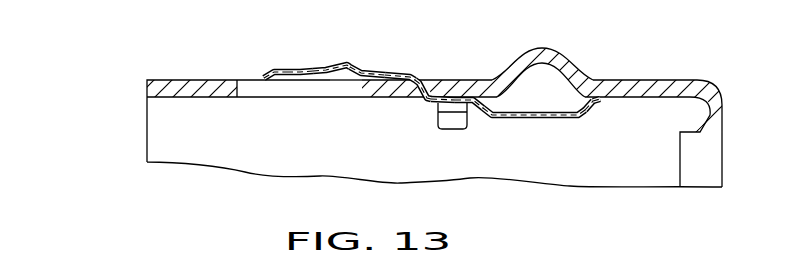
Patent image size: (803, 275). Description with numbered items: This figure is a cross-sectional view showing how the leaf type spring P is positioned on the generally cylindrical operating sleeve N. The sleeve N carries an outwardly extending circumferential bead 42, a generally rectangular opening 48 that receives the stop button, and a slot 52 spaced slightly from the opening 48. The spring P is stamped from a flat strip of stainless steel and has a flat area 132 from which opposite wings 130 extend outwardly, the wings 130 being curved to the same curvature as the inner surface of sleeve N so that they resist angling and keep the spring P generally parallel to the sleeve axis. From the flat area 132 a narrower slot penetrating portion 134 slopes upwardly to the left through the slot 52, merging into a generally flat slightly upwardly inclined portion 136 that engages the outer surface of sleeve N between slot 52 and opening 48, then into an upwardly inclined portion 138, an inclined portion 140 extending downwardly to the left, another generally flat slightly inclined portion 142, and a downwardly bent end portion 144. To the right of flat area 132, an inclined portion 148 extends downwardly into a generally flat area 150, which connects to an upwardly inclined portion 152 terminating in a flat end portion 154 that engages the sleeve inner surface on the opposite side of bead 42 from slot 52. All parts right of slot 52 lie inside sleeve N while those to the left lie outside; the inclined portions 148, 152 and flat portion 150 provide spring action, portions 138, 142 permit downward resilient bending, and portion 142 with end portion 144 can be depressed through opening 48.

The operating sleeve N is at (192, 69).
The circumferential bead 42 is at (563, 62).
The rectangular opening 48 is at (260, 86).
The slot 52 is at (413, 97).
The leaf type spring P is at (338, 90).
The wings 130 is at (455, 118).
The flat area 132 is at (425, 101).
The slot penetrating portion 134 is at (418, 80).
The generally flat slightly upwardly inclined portion 136 is at (392, 71).
The upwardly inclined portion 138 is at (356, 66).
The inclined portion 140 is at (335, 66).
The generally flat slightly upwardly inclined portion 142 is at (292, 68).
The downwardly bent end portion 144 is at (268, 79).
The inclined portion 148 is at (495, 95).
The flat area 150 is at (531, 114).
The upwardly inclined portion 152 is at (583, 116).
The flat end portion 154 is at (599, 101).